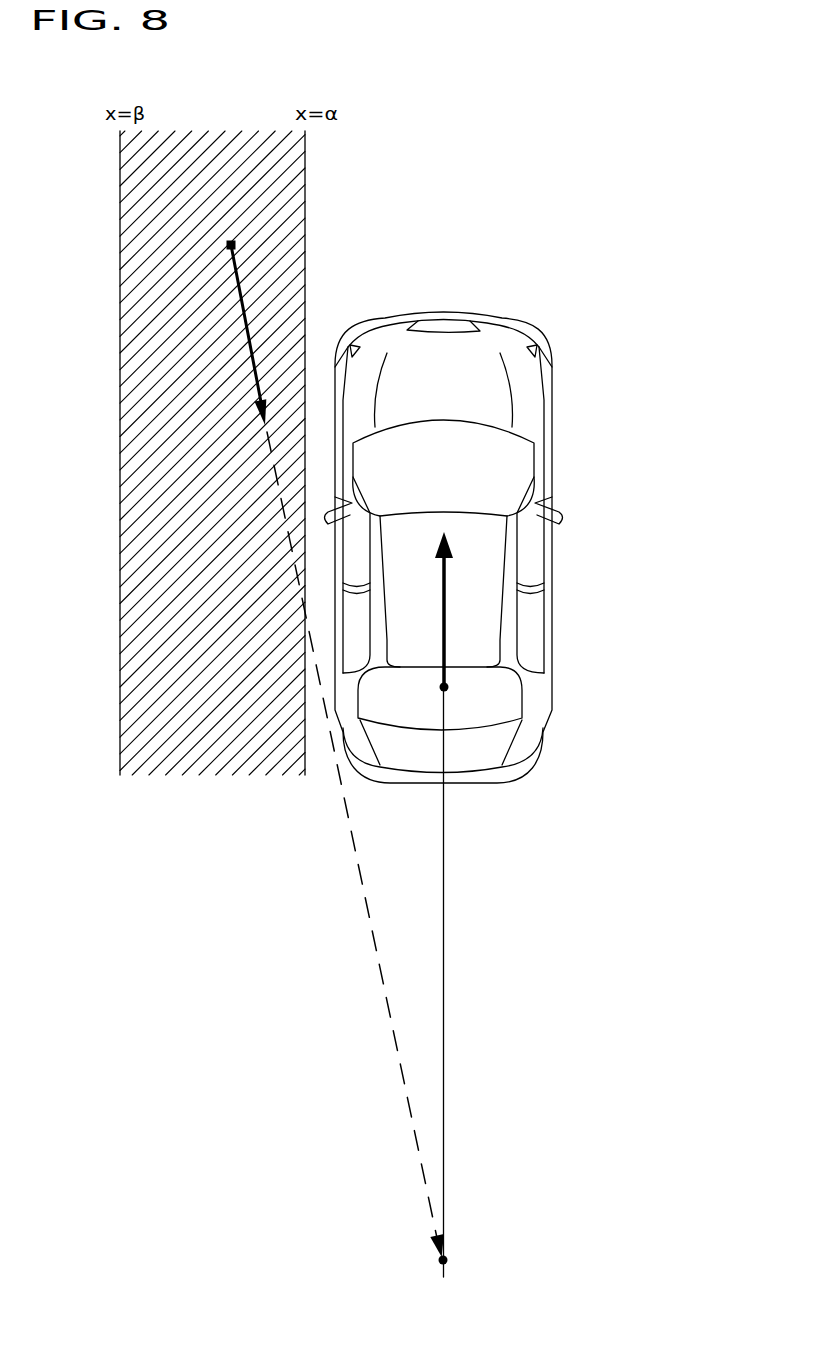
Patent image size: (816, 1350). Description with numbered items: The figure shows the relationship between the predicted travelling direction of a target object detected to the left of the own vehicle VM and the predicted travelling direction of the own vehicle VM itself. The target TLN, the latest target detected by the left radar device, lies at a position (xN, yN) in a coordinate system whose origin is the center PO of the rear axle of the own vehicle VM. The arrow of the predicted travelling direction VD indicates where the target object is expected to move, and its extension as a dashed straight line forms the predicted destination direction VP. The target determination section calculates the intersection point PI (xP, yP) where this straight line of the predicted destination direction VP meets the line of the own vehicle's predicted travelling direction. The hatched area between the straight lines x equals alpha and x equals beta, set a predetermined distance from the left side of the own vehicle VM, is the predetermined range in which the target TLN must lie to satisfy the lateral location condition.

The target TLN is at (227, 243).
The predicted travelling direction of the target object VD is at (260, 368).
The own vehicle VM is at (552, 583).
The center of the rear axle of the own vehicle PO is at (447, 673).
The predicted destination direction VP is at (360, 872).
The intersection point PI is at (447, 1253).